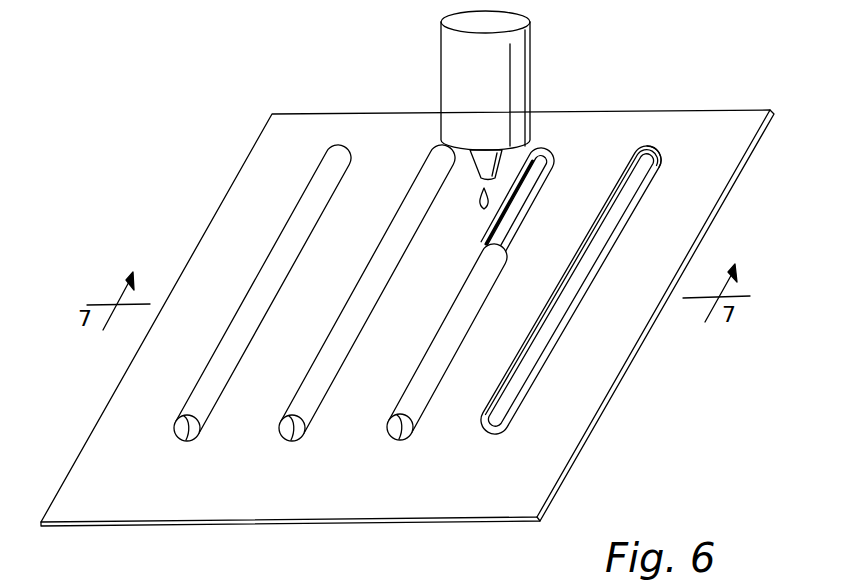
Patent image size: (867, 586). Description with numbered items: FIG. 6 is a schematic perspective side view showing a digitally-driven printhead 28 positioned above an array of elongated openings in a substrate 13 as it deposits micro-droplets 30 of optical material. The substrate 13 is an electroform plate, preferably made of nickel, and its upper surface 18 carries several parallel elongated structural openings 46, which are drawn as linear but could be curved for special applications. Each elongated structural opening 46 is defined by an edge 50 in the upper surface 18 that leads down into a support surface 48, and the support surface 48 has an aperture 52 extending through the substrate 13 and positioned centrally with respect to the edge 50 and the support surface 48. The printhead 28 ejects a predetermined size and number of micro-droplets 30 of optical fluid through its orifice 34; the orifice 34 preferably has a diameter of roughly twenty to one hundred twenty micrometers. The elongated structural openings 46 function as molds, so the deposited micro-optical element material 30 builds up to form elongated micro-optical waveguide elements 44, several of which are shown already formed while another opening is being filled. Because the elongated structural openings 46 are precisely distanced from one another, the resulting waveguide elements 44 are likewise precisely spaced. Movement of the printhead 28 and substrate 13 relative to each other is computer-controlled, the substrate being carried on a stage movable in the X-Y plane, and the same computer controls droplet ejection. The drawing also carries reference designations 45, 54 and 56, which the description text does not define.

The substrate 13 is at (422, 287).
The upper surface 18 is at (232, 206).
The digitally-driven printhead 28 is at (532, 55).
The micro-droplets of optical fluid 30 is at (480, 205).
The orifice 34 is at (500, 170).
The elongated micro-optical waveguide elements 44 is at (349, 319).
The plate assembly 45 is at (422, 287).
The elongated structural opening 46 is at (560, 160).
The support surface 48 is at (640, 286).
The edge 50 is at (660, 165).
The aperture 52 is at (533, 365).
The groove side wall 54 is at (594, 290).
The rod array 56 is at (349, 328).